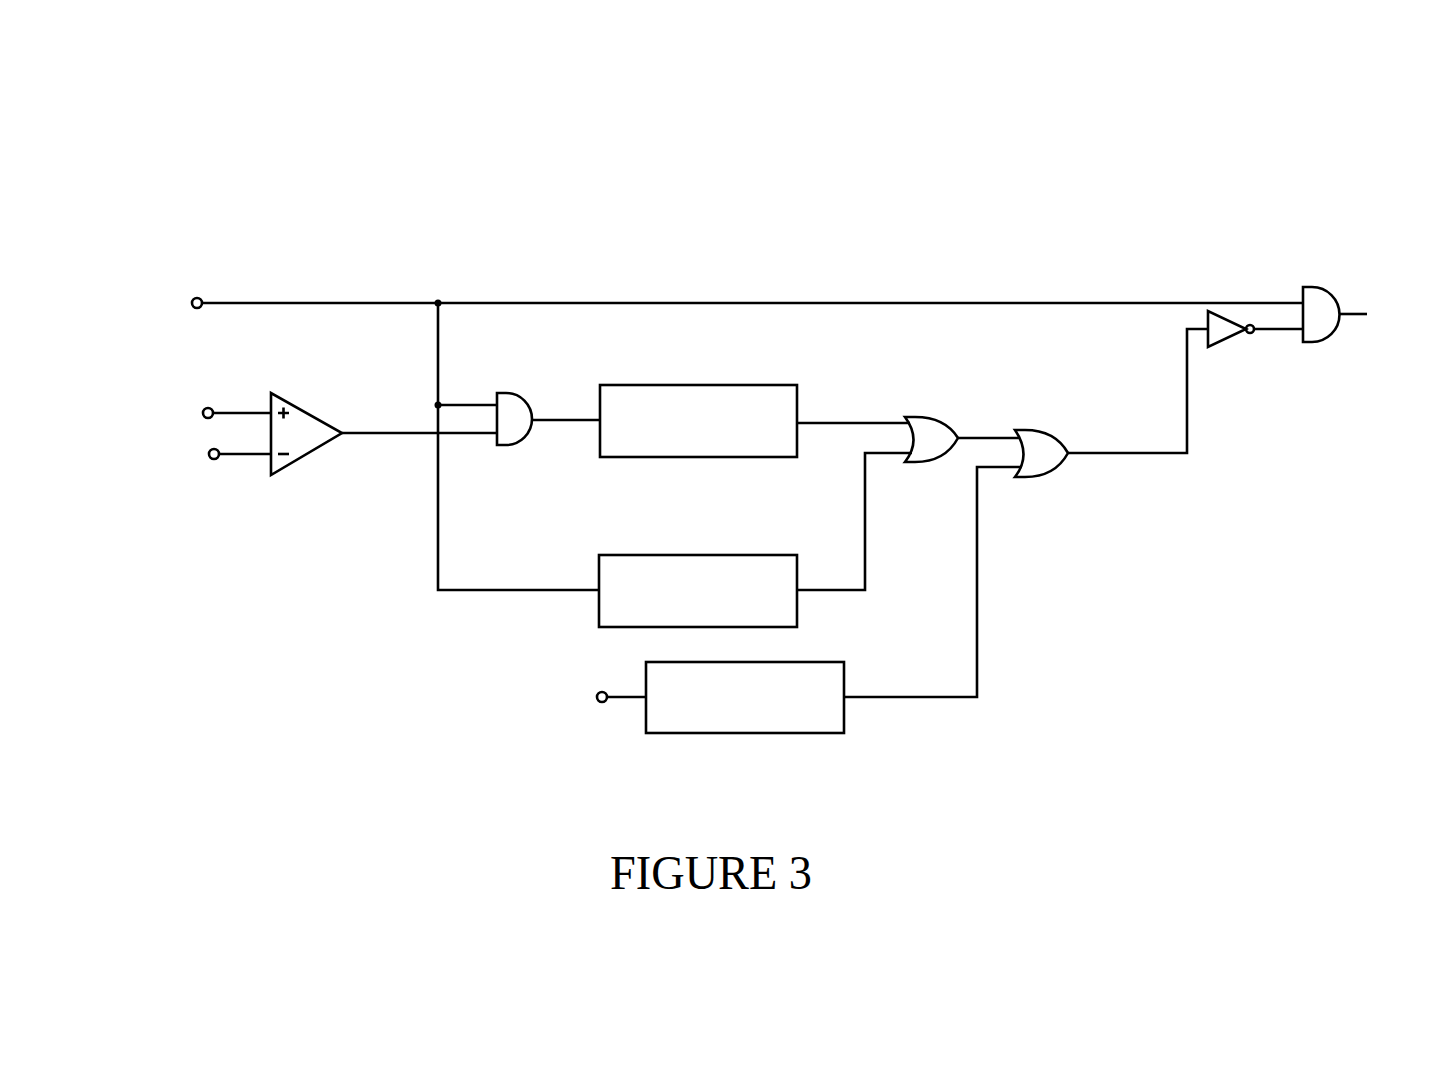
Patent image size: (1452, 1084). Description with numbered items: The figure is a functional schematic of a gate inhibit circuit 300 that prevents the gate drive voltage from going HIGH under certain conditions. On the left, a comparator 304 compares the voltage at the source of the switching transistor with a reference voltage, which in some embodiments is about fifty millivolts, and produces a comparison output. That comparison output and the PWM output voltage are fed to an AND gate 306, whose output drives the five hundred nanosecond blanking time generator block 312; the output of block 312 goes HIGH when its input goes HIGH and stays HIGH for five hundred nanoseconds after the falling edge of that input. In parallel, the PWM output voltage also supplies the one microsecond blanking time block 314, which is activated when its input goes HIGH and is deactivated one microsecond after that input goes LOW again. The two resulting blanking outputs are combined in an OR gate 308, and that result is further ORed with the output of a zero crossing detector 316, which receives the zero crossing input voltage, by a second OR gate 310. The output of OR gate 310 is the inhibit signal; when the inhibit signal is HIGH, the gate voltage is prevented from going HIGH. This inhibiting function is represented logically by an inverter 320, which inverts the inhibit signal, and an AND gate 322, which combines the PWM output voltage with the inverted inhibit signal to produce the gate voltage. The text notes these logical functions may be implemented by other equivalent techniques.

The gate inhibit circuit 300 is at (437, 180).
The comparator 304 is at (320, 412).
The AND gate 306 is at (527, 393).
The OR gate 308 is at (944, 422).
The OR gate 310 is at (1040, 477).
The 500 ns blanking time generator block 312 is at (746, 385).
The 1 μs blanking time block 314 is at (757, 555).
The zero crossing detector 316 is at (769, 735).
The inverter 320 is at (1218, 347).
The AND gate 322 is at (1323, 288).